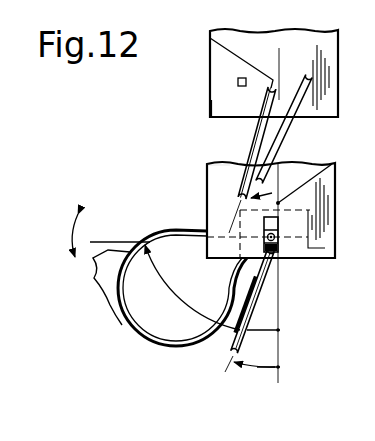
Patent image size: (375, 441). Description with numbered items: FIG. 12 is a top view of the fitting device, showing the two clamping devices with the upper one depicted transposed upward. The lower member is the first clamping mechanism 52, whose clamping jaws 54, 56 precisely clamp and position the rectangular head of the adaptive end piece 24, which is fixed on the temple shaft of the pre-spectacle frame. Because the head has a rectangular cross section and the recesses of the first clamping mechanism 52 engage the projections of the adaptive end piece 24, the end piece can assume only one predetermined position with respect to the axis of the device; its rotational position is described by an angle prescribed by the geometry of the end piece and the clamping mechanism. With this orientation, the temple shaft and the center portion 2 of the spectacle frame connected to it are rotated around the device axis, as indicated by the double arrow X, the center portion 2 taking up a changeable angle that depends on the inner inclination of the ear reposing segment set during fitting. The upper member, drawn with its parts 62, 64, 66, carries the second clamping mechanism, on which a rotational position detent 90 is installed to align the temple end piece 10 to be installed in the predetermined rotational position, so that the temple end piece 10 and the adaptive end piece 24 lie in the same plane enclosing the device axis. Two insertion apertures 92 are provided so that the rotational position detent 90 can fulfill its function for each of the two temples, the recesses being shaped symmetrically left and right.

The center portion of the spectacle frame 2 is at (102, 297).
The temple end piece 10 is at (252, 134).
The adaptive end piece 24 is at (258, 312).
The first clamping mechanism 52 is at (200, 207).
The clamping jaw 54 is at (220, 176).
The clamping jaw 56 is at (322, 245).
The upper clamping member 62 is at (197, 87).
The bearing portion of upper clamping member 64 is at (311, 43).
The guide surface 66 is at (217, 102).
The rotational position detent 90 is at (284, 128).
The insertion aperture 92 is at (236, 79).
The double arrow X is at (72, 228).